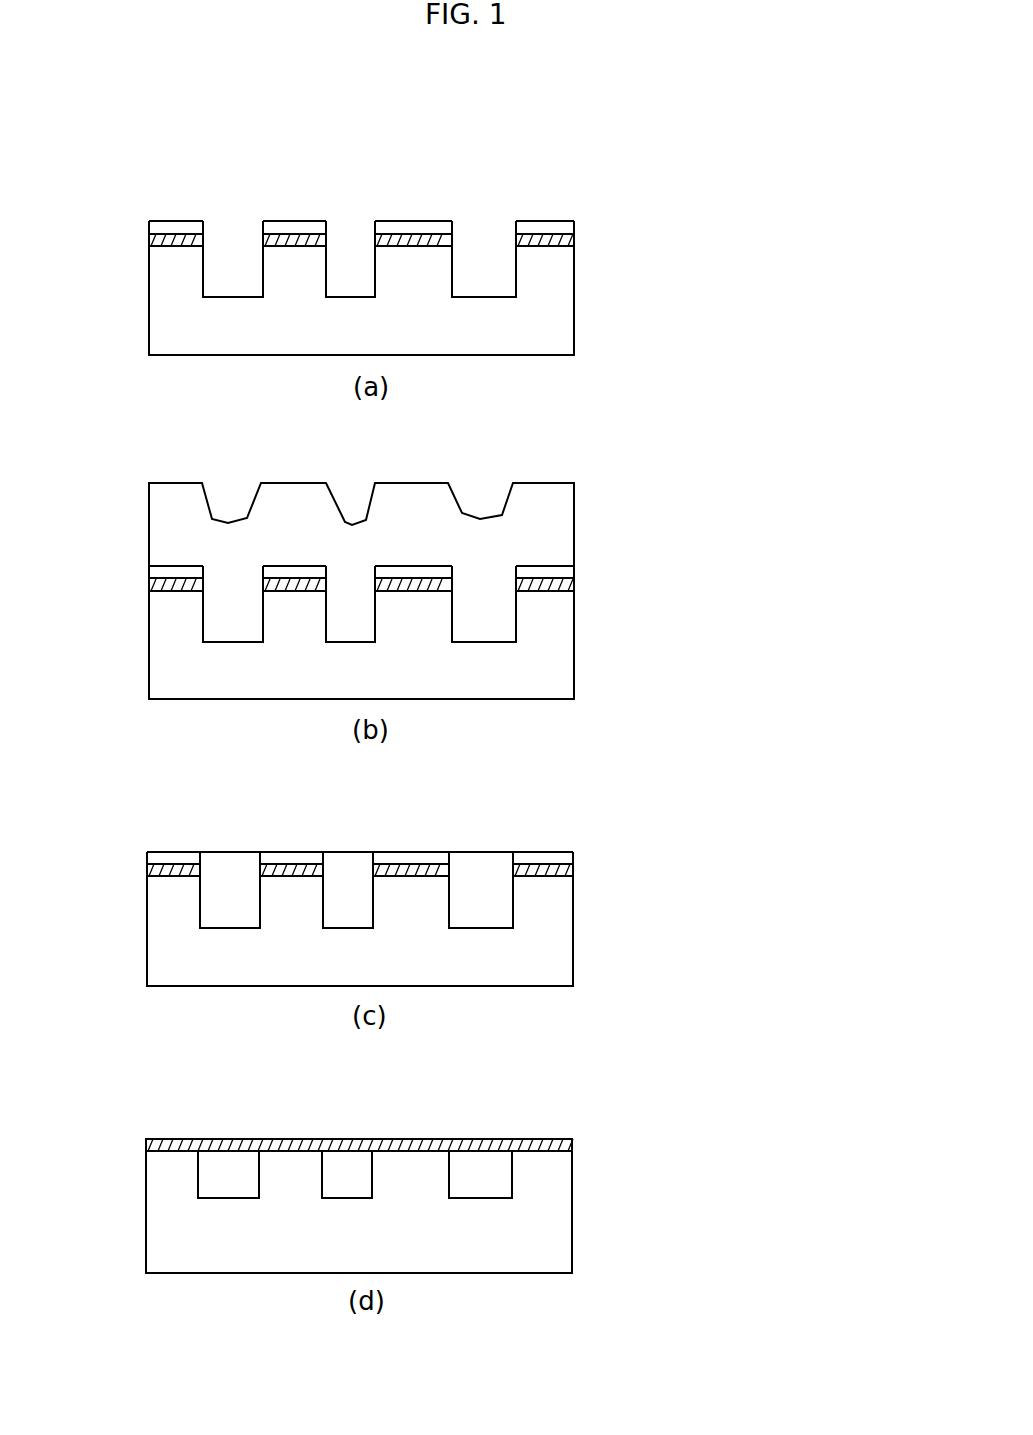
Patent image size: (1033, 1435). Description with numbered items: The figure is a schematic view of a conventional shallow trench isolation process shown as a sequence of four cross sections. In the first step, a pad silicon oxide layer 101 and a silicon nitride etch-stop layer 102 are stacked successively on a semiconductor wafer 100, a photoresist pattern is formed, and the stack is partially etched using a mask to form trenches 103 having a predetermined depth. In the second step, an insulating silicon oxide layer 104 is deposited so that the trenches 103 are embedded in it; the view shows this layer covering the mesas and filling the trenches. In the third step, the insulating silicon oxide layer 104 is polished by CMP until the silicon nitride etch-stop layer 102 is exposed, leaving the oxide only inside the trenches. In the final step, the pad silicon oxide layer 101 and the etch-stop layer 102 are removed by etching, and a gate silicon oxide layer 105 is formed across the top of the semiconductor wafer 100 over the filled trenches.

The semiconductor wafer 100 is at (558, 317).
The pad silicon oxide layer 101 is at (574, 238).
The silicon nitride etch-stop layer 102 is at (568, 228).
The trench 103 is at (229, 266).
The insulating silicon oxide layer 104 is at (232, 900).
The gate silicon oxide layer 105 is at (572, 1145).